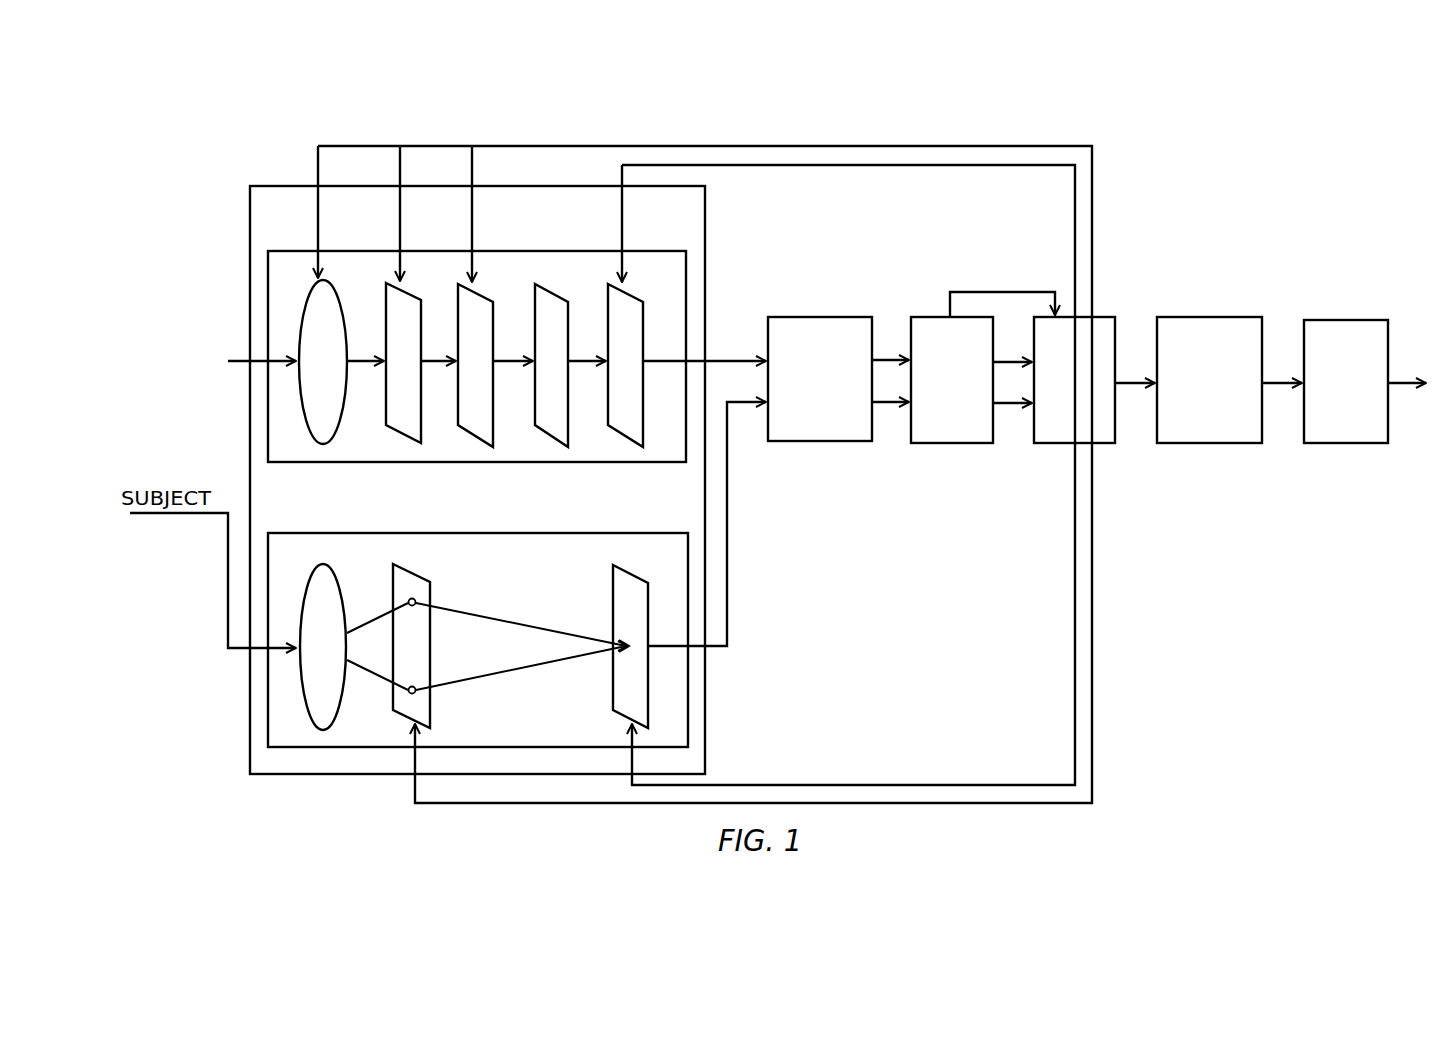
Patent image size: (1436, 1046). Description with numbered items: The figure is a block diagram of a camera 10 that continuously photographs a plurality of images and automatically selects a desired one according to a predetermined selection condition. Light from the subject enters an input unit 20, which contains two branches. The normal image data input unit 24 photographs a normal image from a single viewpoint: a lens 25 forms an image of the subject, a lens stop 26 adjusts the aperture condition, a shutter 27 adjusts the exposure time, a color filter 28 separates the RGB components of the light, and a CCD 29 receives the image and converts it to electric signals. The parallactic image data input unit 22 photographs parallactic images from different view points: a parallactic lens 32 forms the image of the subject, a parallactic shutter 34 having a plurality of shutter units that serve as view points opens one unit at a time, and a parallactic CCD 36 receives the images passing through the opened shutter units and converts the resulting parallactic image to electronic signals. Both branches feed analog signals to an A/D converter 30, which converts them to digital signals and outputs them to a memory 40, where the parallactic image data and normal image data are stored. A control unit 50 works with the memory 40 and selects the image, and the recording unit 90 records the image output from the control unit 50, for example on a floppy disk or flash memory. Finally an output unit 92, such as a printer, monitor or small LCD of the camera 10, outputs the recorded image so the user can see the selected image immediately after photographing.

The camera 10 is at (1275, 136).
The input unit 20 is at (705, 228).
The parallactic image data input unit 22 is at (633, 533).
The normal image data input unit 24 is at (546, 251).
The lens 25 is at (338, 318).
The lens stop 26 is at (421, 318).
The shutter 27 is at (493, 320).
The color filter 28 is at (568, 322).
The charge coupled device (CCD) 29 is at (640, 322).
The A/D converter 30 is at (840, 442).
The parallactic lens 32 is at (345, 612).
The parallactic shutter 34 is at (432, 596).
The parallactic charge coupled device (CCD) 36 is at (648, 612).
The memory 40 is at (960, 443).
The control unit 50 is at (1045, 443).
The recording unit 90 is at (1235, 443).
The output unit 92 is at (1360, 443).